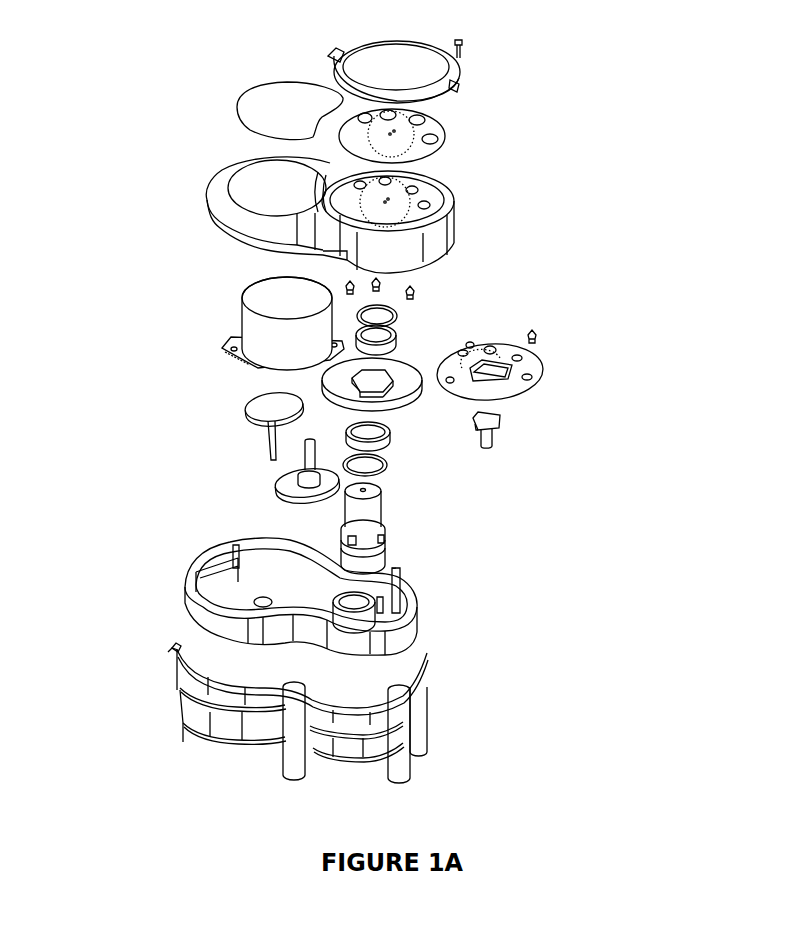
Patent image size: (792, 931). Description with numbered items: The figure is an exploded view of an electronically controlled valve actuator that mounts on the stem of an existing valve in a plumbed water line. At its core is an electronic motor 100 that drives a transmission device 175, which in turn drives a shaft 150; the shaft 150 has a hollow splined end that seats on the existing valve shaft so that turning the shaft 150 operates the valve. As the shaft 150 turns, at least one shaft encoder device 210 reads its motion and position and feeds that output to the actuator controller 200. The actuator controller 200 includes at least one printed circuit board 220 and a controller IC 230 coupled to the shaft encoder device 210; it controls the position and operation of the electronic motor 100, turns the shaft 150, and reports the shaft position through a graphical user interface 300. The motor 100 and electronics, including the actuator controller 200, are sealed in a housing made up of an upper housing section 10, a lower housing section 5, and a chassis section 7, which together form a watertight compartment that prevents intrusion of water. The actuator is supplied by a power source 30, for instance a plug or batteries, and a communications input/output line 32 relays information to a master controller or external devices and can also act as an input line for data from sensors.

The graphical user interface 300 is at (248, 24).
The upper housing section 10 is at (466, 226).
The controller IC 230 is at (420, 291).
The electronic motor 100 is at (252, 330).
The printed circuit board 220 is at (550, 372).
The shaft encoder device 210 is at (507, 427).
The actuator controller 200 is at (653, 320).
The transmission device 175 is at (230, 383).
The shaft 150 is at (378, 513).
The power source 30 is at (172, 642).
The chassis section 7 is at (428, 631).
The communications input/output line 32 is at (165, 655).
The lower housing section 5 is at (185, 722).